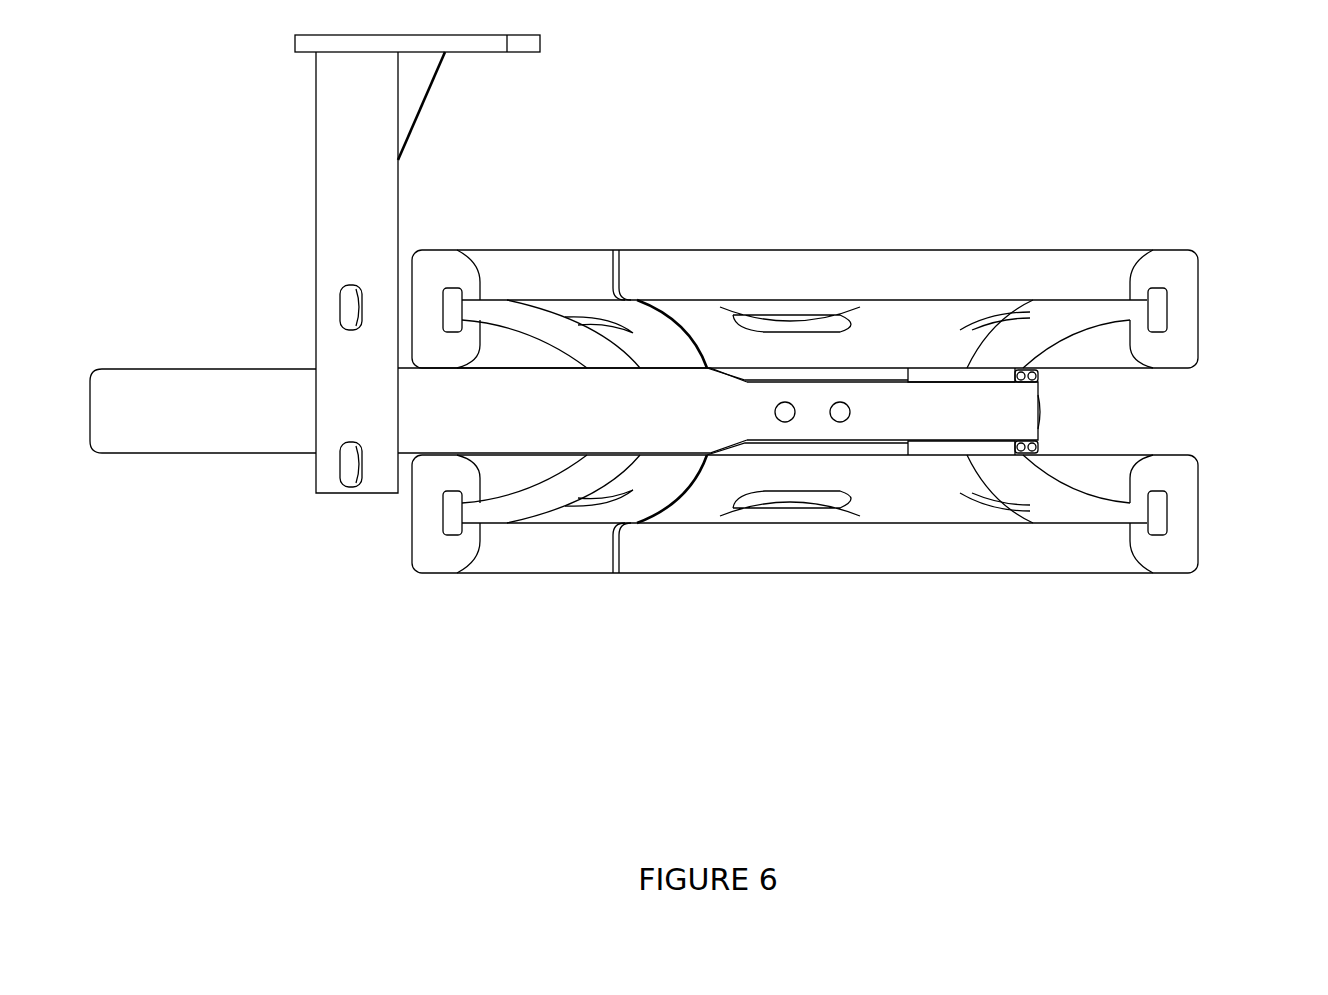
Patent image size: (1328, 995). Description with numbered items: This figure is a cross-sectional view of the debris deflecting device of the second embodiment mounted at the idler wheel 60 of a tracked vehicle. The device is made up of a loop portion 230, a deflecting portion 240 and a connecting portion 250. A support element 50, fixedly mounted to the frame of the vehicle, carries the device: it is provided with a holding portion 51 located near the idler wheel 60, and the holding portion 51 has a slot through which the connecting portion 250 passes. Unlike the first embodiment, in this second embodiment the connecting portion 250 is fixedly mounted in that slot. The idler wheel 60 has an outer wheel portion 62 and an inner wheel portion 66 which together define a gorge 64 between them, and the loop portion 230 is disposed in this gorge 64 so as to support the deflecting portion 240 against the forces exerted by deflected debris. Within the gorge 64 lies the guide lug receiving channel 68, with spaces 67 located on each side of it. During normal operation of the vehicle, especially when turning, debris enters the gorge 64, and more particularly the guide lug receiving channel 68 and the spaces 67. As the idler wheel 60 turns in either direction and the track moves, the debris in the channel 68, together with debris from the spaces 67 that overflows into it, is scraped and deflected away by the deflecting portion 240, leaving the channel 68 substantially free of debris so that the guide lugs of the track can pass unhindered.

The support element 50 is at (377, 180).
The holding portion 51 is at (345, 358).
The connecting portion 250 is at (203, 427).
The deflecting portion 240 is at (566, 427).
The loop portion 230 is at (909, 427).
The guide lug receiving channel 68 is at (1087, 427).
The inner wheel portion 66 is at (703, 275).
The outer wheel portion 62 is at (703, 548).
The spaces 67 is at (507, 347).
The gorge 64 is at (1251, 346).
The idler wheel 60 is at (1193, 715).